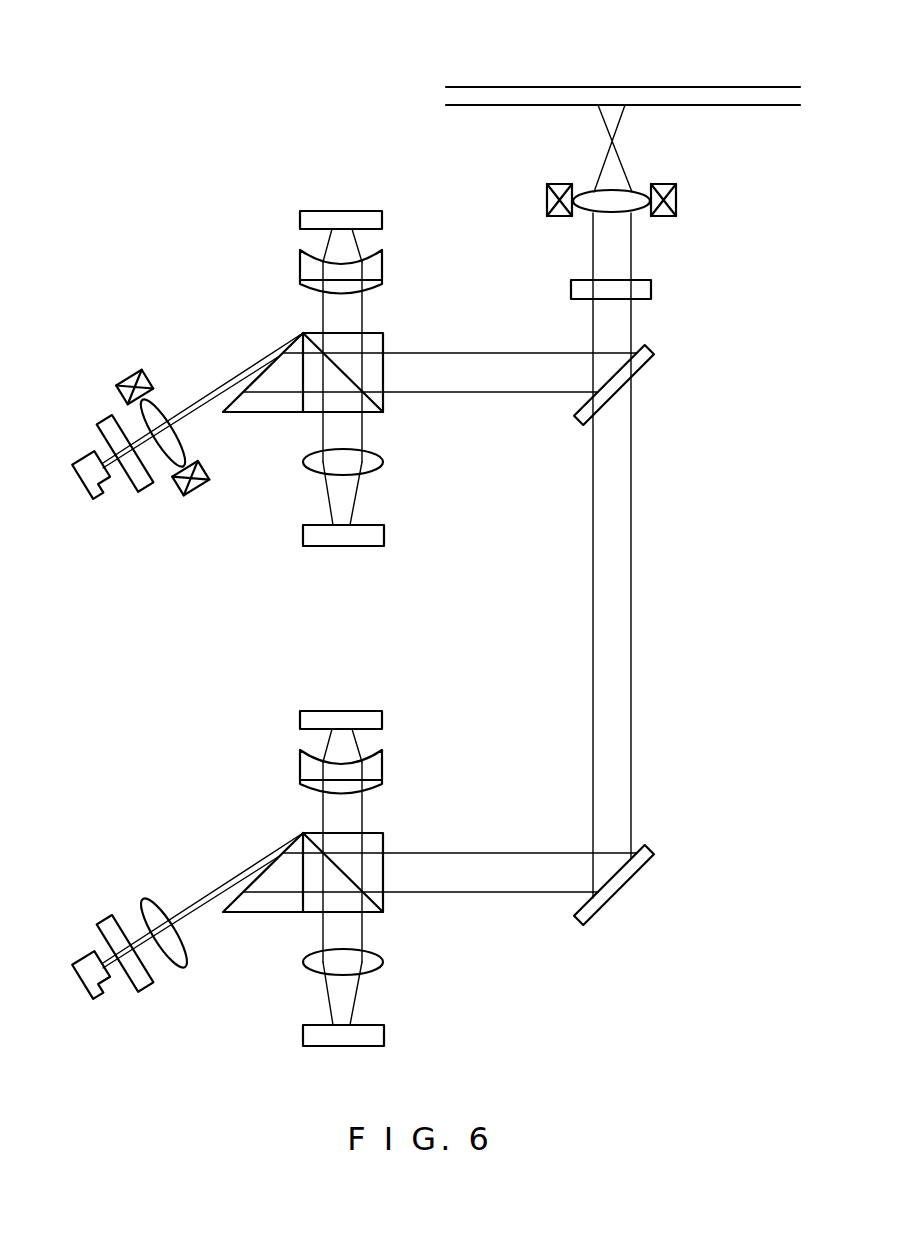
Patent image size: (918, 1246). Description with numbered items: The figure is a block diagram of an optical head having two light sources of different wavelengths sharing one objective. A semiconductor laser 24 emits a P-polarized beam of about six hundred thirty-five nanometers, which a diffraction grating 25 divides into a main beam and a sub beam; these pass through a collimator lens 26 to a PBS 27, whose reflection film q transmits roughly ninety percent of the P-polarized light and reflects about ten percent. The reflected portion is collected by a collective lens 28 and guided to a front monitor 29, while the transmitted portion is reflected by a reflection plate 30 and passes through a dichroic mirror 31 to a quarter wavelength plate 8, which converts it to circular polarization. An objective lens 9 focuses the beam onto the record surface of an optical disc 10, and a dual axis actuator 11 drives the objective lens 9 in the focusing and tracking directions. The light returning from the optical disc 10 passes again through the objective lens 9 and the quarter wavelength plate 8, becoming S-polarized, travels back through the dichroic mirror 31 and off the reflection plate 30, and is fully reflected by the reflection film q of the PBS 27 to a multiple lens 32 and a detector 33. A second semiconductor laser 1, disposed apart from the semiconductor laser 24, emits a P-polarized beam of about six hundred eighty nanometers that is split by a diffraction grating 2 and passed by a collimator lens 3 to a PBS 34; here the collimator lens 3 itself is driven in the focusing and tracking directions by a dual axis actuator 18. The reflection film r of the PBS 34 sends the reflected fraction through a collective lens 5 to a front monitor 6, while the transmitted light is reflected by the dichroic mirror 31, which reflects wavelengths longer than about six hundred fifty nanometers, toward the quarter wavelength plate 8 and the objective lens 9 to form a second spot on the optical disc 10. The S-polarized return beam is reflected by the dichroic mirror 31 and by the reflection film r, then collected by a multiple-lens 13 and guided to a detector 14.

The semiconductor laser 1 is at (82, 453).
The diffraction grating 2 is at (103, 418).
The collimator lens 3 is at (160, 397).
The collective lens 5 is at (303, 462).
The front monitor 6 is at (303, 535).
The 1/4 wavelength plate 8 is at (571, 292).
The objective lens 9 is at (637, 190).
The optical disc 10 is at (782, 93).
The dual axis actuator 11 is at (547, 205).
The multiple-lens 13 is at (300, 272).
The detector 14 is at (310, 211).
The dual axis actuator 18 is at (125, 378).
The semiconductor laser 24 is at (82, 953).
The diffraction grating 25 is at (105, 917).
The collimator lens 26 is at (160, 897).
The PBS 27 is at (300, 833).
The collective lens 28 is at (303, 962).
The front monitor 29 is at (303, 1035).
The reflection plate 30 is at (653, 853).
The dichroic mirror 31 is at (648, 352).
The multiple lens 32 is at (300, 772).
The detector 33 is at (310, 711).
The PBS 34 is at (300, 332).
The reflection film r is at (380, 395).
The reflection film q is at (380, 895).